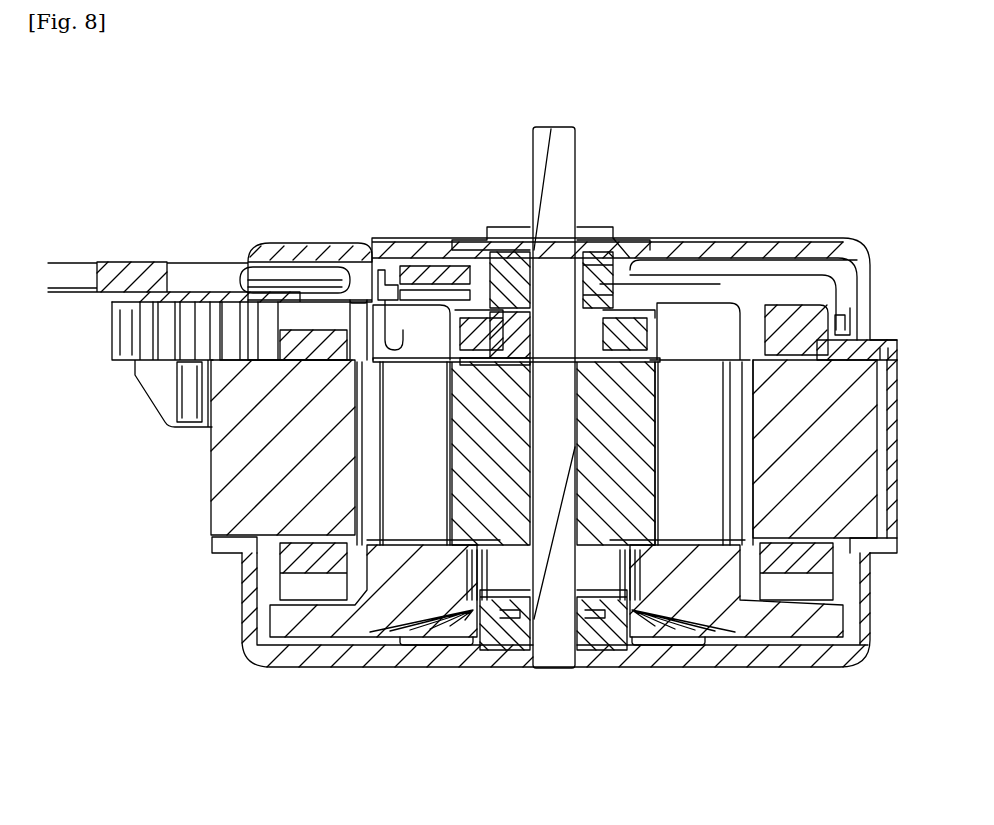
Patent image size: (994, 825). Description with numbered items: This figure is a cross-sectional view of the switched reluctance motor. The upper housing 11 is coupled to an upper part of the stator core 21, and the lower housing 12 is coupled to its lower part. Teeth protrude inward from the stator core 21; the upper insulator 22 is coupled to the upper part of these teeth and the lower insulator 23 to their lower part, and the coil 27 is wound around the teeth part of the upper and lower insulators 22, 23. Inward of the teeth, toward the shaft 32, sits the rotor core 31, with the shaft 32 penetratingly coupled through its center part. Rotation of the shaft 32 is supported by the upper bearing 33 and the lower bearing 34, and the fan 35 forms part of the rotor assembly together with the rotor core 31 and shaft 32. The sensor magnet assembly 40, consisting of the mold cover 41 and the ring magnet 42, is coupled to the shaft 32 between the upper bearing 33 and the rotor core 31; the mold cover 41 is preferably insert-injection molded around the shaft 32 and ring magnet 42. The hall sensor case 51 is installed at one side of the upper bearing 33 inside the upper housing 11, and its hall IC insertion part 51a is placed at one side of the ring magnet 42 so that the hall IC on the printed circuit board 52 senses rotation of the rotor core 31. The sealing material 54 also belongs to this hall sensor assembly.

The upper housing 11 is at (713, 253).
The lower housing 12 is at (825, 662).
The stator core 21 is at (863, 450).
The upper insulator 22 is at (833, 357).
The lower insulator 23 is at (833, 582).
The coil 27 is at (837, 323).
The rotor core 31 is at (642, 523).
The shaft 32 is at (548, 130).
The upper bearing 33 is at (590, 280).
The lower bearing 34 is at (510, 627).
The fan 35 is at (447, 633).
The sensor magnet assembly 40 is at (484, 163).
The mold cover 41 is at (520, 323).
The ring magnet 42 is at (470, 307).
The hall sensor case 51 is at (310, 270).
The hall IC insertion part 51a is at (358, 285).
The printed circuit board 52 is at (377, 283).
The sealing material 54 is at (433, 270).